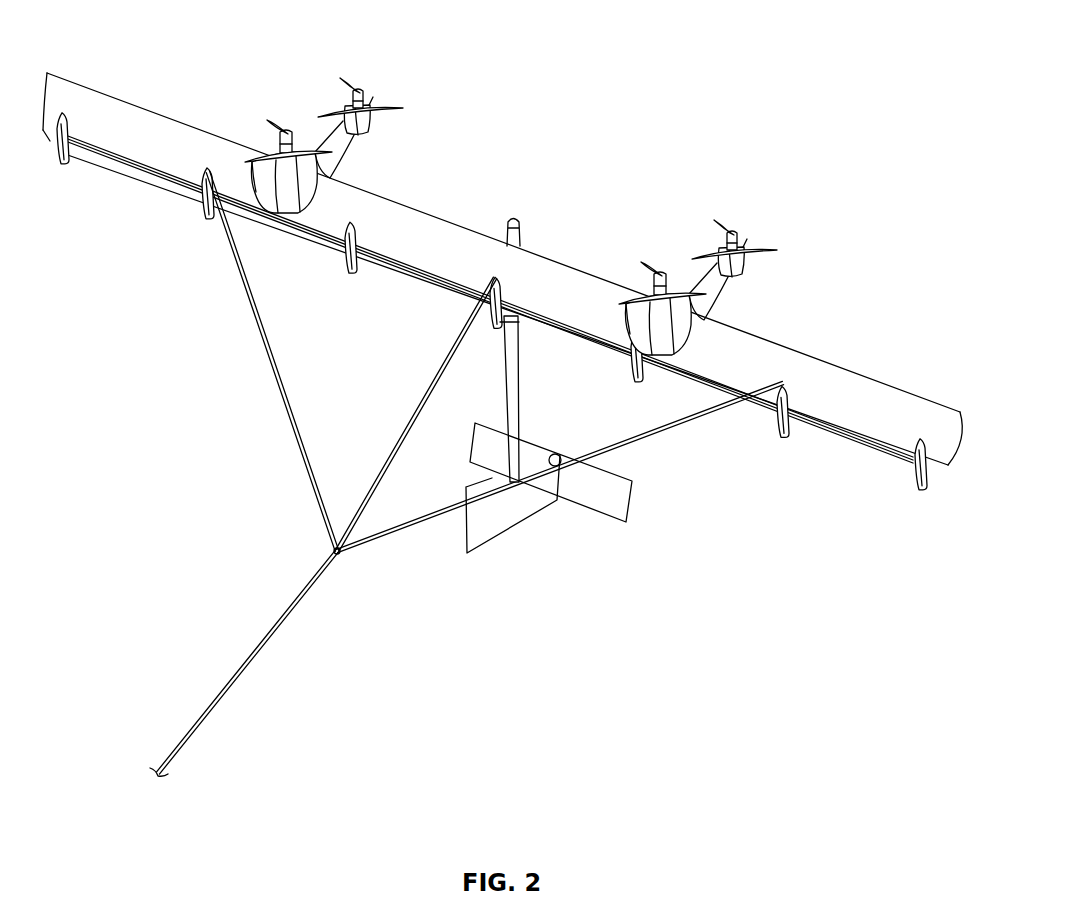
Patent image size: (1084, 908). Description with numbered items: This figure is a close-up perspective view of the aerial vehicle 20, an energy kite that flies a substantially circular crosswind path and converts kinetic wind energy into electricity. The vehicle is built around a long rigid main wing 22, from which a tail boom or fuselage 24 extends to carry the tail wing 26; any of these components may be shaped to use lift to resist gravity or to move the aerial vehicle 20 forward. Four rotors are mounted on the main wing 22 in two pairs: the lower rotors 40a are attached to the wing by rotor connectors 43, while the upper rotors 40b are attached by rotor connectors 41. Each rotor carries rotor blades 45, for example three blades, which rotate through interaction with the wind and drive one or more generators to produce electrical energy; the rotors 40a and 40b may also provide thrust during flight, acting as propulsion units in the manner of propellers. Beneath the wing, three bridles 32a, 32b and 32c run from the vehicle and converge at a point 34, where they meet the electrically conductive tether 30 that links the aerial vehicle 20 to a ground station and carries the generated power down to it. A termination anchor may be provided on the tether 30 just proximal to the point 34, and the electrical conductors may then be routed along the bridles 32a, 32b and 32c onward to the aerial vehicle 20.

The aerial vehicle 20 is at (564, 106).
The main wing 22 is at (860, 400).
The tail boom 24 is at (515, 388).
The tail wing 26 is at (527, 510).
The tether 30 is at (267, 642).
The bridle 32a is at (273, 362).
The bridle 32b is at (433, 387).
The bridle 32c is at (427, 518).
The point where the tether meets the bridles 34 is at (343, 557).
The lower rotor 40a is at (281, 130).
The upper rotor 40b is at (357, 88).
The rotor connector 41 is at (360, 137).
The rotor connector 43 is at (270, 183).
The rotor blade 45 is at (387, 104).